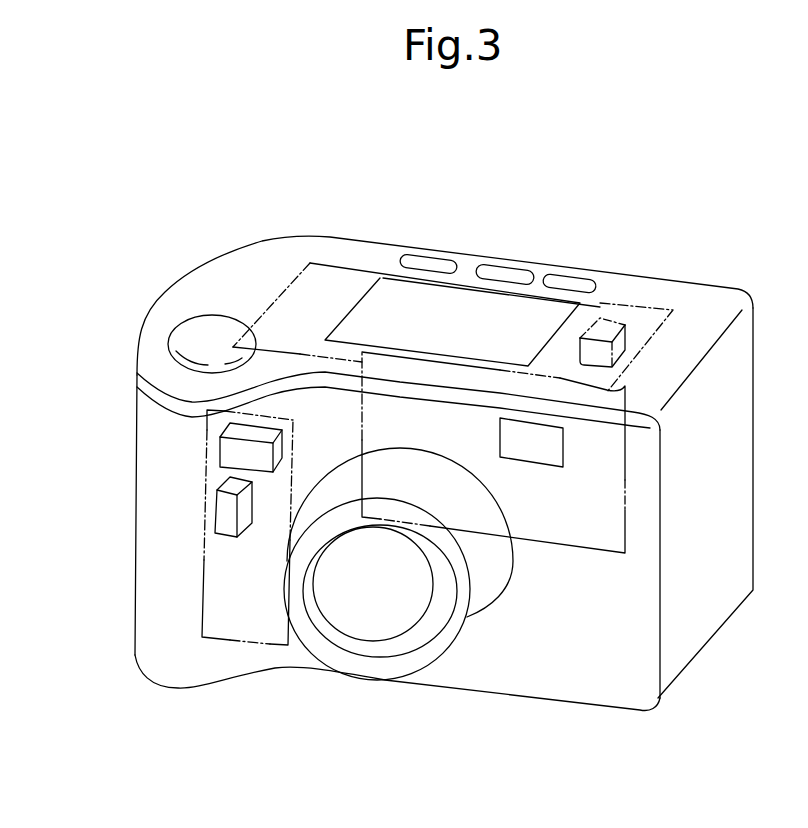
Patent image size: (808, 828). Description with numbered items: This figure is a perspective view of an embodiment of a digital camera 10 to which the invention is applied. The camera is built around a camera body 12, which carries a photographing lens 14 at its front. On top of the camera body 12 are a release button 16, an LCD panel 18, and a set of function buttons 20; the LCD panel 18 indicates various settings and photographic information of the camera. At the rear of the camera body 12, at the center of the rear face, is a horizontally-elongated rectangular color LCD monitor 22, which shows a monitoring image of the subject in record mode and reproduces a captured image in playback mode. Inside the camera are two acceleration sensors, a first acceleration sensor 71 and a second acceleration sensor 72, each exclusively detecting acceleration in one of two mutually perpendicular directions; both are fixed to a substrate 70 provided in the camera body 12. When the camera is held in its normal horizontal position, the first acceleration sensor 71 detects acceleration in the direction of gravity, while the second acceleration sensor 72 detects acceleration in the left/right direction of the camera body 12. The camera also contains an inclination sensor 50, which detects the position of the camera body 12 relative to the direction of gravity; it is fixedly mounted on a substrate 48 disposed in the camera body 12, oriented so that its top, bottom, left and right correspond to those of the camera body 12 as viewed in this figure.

The digital camera 10 is at (437, 214).
The camera body 12 is at (740, 458).
The photographing lens 14 is at (348, 613).
The release button 16 is at (190, 335).
The LCD panel 18 is at (383, 283).
The function buttons 20 is at (548, 278).
The LCD monitor 22 is at (560, 543).
The substrate 48 is at (600, 303).
The inclination sensor 50 is at (627, 332).
The substrate 70 is at (207, 578).
The first acceleration sensor 71 is at (205, 502).
The second acceleration sensor 72 is at (205, 452).